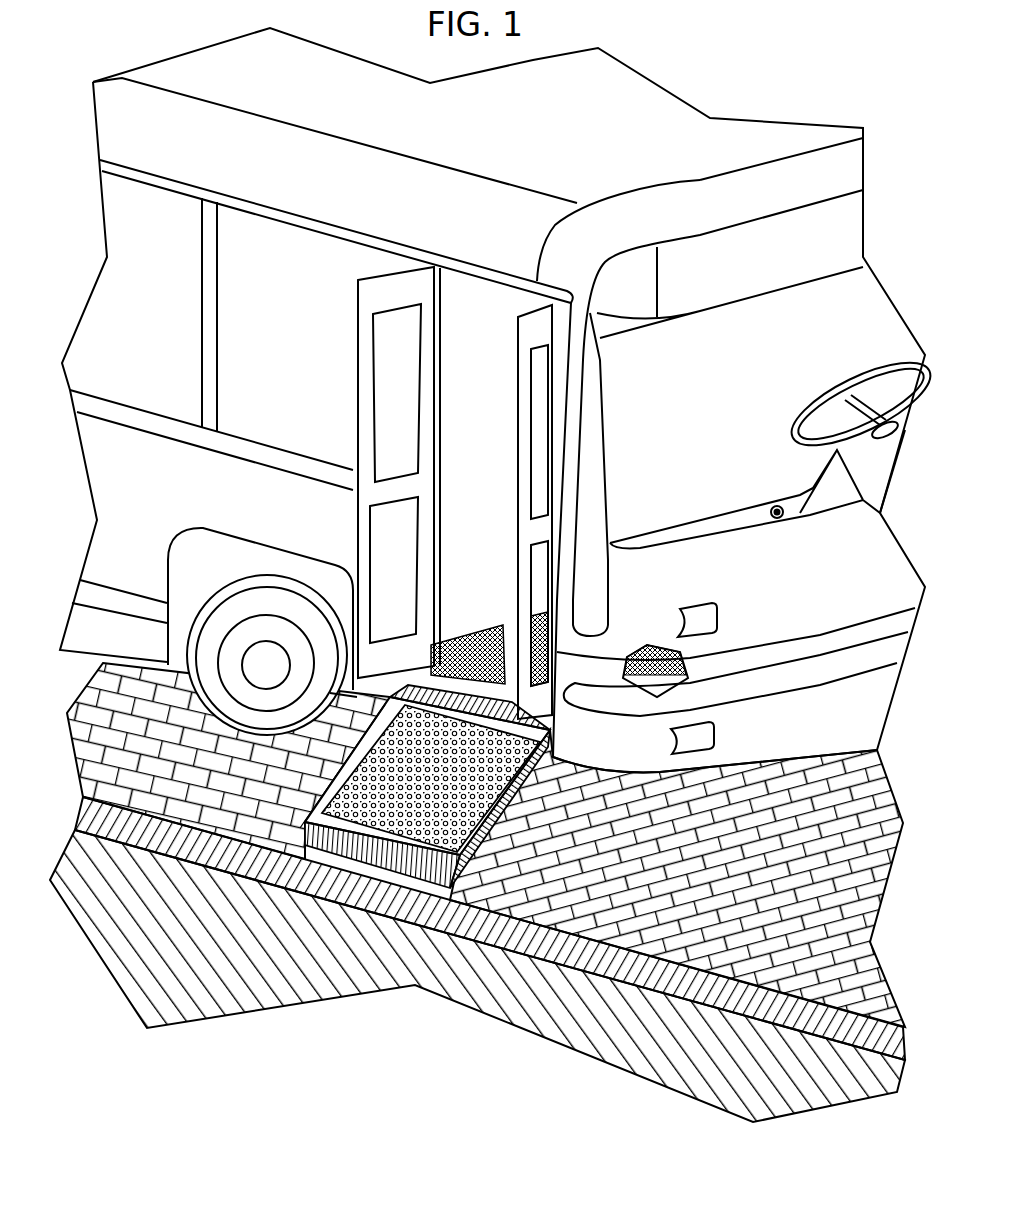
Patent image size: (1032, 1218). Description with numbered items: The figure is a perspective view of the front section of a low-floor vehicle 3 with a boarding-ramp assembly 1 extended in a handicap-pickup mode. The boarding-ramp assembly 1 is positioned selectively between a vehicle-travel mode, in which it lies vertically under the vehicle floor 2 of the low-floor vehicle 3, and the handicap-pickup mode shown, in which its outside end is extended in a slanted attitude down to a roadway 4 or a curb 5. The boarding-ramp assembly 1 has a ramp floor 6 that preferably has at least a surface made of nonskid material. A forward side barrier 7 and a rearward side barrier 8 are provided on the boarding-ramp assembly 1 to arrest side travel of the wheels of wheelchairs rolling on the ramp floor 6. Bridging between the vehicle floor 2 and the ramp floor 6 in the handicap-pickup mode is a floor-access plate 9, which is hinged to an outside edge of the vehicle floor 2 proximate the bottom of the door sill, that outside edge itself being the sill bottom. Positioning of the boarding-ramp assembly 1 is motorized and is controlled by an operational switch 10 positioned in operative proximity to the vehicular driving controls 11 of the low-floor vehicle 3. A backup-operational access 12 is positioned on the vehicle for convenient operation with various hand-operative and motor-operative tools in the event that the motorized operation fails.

The boarding-ramp assembly 1 is at (425, 804).
The vehicle floor 2 is at (458, 641).
The low-floor vehicle 3 is at (500, 400).
The roadway 4 is at (832, 773).
The curb 5 is at (733, 1020).
The ramp floor 6 is at (418, 830).
The forward side barrier 7 is at (490, 825).
The rearward side barrier 8 is at (365, 850).
The floor-access plate 9 is at (497, 630).
The operational switch 10 is at (774, 505).
The vehicular driving controls 11 is at (770, 423).
The backup-operational access 12 is at (651, 645).